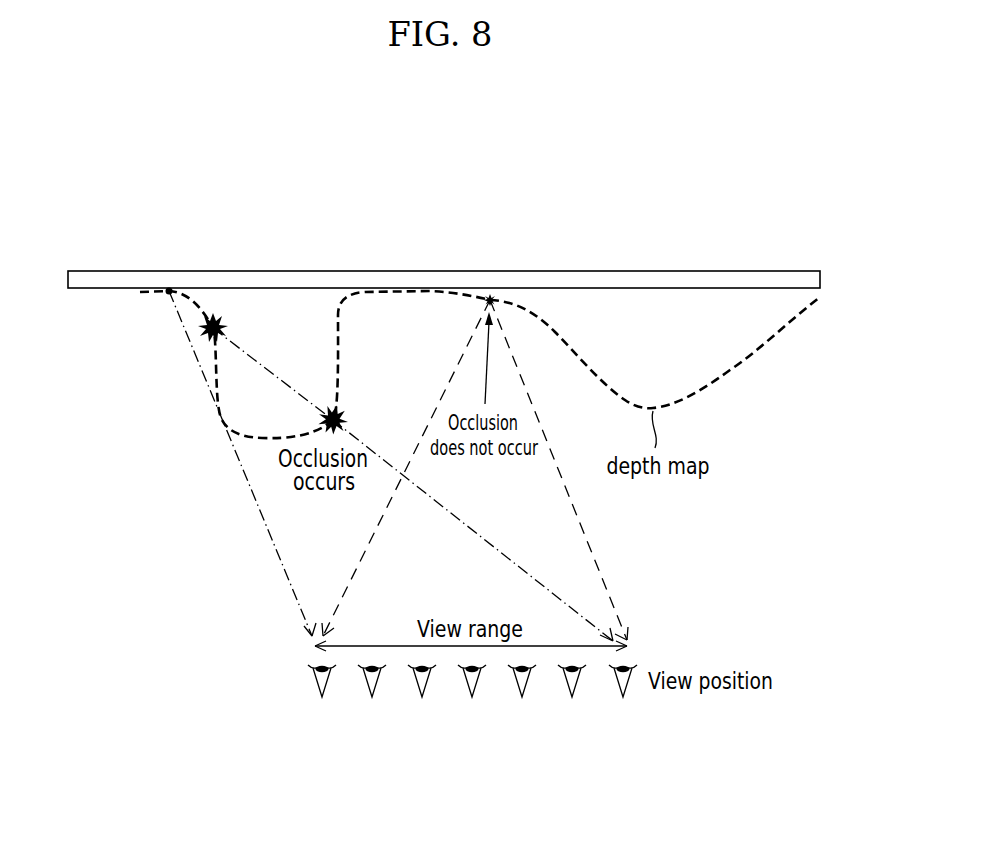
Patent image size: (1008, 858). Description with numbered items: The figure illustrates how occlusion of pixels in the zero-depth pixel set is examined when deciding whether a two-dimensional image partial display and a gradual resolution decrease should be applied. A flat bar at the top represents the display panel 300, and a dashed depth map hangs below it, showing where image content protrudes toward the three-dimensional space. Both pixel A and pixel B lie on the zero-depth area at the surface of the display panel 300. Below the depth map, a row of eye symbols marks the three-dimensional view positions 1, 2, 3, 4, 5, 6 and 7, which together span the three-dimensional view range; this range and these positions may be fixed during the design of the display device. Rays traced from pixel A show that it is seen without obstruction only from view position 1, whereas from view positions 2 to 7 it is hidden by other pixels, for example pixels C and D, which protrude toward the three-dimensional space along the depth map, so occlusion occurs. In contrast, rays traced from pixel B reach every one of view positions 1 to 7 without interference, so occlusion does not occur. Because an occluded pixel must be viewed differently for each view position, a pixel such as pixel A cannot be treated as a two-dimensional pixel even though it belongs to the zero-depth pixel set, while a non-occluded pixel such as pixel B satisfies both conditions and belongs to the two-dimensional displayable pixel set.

The display panel 300 is at (633, 279).
The pixel A is at (164, 306).
The pixel B is at (480, 309).
The pixel C is at (340, 415).
The pixel D is at (223, 325).
The 3D view position 1 is at (322, 699).
The 3D view position 2 is at (372, 699).
The 3D view position 3 is at (422, 699).
The 3D view position 4 is at (472, 699).
The 3D view position 5 is at (522, 699).
The 3D view position 6 is at (572, 699).
The 3D view position 7 is at (623, 699).